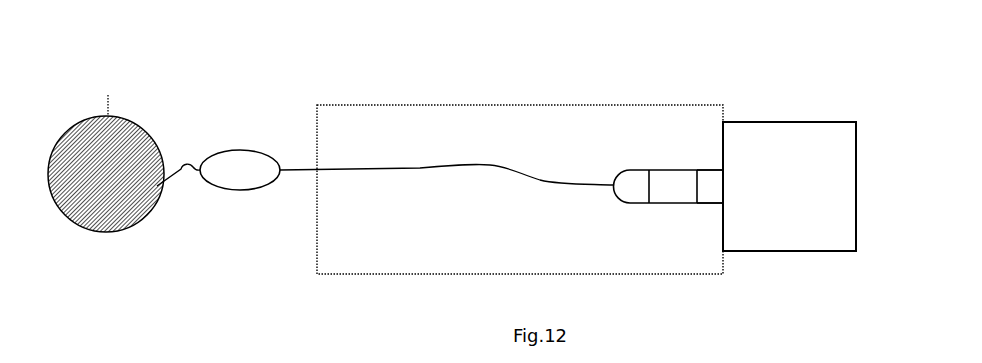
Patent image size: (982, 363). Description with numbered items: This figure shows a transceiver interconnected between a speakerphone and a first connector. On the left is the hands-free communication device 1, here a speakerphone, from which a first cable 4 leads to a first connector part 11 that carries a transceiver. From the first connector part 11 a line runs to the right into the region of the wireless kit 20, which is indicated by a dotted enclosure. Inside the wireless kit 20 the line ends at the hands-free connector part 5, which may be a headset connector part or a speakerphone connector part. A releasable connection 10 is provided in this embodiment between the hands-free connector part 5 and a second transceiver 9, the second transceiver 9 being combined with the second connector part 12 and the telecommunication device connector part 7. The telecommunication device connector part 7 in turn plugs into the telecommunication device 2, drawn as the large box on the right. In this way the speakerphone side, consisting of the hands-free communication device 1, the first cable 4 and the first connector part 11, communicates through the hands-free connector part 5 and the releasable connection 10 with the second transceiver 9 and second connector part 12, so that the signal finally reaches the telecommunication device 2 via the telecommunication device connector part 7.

The hands-free communication device 1 is at (128, 120).
The telecommunication device 2 is at (794, 121).
The first cable 4 is at (184, 171).
The hands-free connector part 5 is at (621, 170).
The telecommunication device connector part 7 is at (705, 204).
The second transceiver 9 is at (673, 158).
The releasable connection 10 is at (648, 207).
The first connector part 11 is at (233, 150).
The second connector part 12 is at (657, 170).
The wireless kit 20 is at (356, 105).